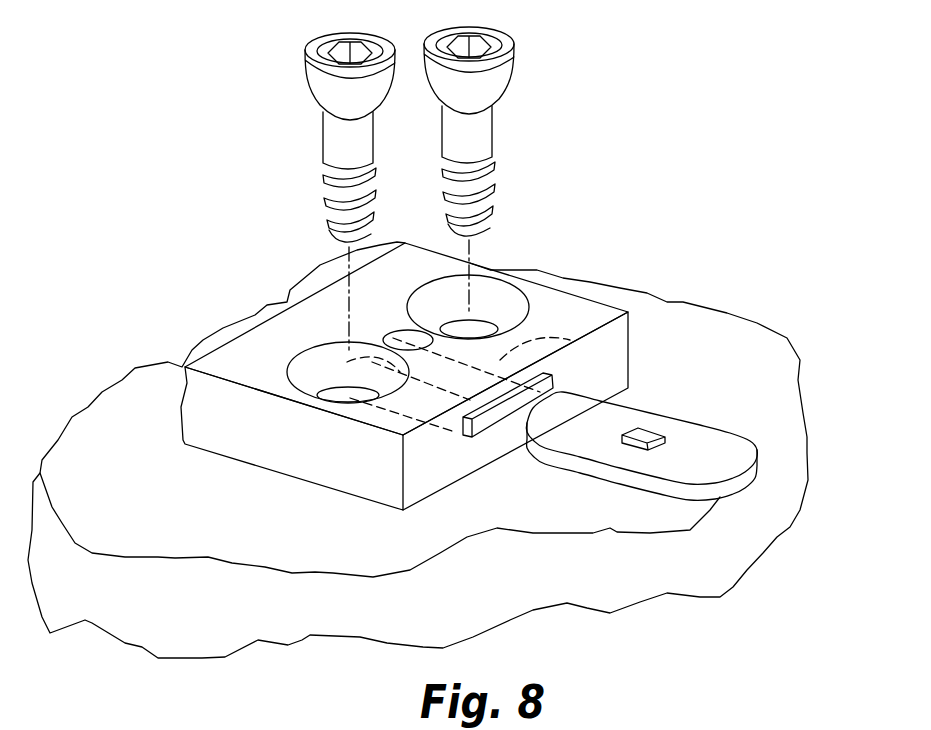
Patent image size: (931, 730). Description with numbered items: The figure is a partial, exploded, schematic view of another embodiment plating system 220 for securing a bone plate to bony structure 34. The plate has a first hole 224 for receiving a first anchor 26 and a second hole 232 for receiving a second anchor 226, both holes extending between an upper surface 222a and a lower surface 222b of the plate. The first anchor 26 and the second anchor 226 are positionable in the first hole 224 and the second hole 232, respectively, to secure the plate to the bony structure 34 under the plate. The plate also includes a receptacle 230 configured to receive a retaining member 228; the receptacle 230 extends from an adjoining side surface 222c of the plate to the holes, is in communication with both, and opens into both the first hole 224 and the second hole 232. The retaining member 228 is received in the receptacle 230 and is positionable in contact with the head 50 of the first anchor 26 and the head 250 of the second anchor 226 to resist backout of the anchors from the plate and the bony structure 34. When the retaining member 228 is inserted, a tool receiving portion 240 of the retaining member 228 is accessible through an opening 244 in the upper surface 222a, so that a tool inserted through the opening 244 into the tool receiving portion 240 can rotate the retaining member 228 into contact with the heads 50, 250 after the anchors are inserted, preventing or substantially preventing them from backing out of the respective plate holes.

The first anchor 26 is at (306, 129).
The head of anchor 50 is at (305, 80).
The second anchor 226 is at (519, 126).
The head of anchor 250 is at (514, 80).
The plating system 220 is at (425, 344).
The upper surface 222a is at (247, 352).
The lower surface 222b is at (312, 485).
The side surface 222c is at (433, 467).
The first hole 224 is at (318, 345).
The second hole 232 is at (493, 277).
The opening 244 is at (397, 330).
The receptacle 230 is at (570, 340).
The retaining member 228 is at (694, 426).
The tool receiving portion 240 is at (660, 427).
The bony structure 34 is at (105, 437).